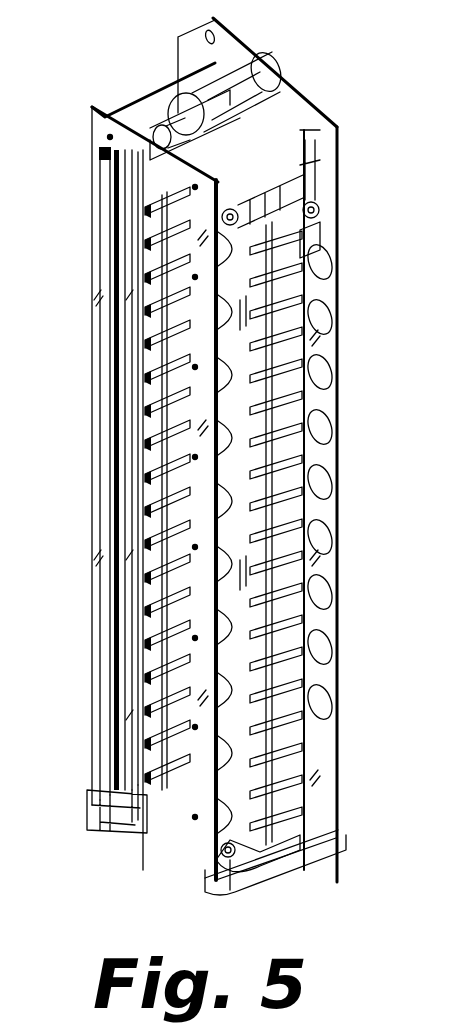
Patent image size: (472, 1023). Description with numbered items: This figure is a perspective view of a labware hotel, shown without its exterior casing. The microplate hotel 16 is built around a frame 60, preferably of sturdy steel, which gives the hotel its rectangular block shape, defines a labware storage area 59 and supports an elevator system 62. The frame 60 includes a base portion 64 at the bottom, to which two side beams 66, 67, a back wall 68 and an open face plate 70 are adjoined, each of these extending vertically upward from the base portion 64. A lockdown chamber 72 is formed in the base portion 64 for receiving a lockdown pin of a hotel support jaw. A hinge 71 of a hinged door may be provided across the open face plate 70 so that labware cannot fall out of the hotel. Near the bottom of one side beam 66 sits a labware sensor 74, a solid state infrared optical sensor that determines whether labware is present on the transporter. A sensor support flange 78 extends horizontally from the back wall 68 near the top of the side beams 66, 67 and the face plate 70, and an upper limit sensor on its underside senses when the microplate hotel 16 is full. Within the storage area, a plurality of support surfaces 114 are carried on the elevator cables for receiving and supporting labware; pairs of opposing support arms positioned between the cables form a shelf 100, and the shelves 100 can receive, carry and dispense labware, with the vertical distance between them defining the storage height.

The microplate hotel 16 is at (113, 64).
The labware storage area 59 is at (138, 358).
The frame 60 is at (330, 342).
The elevator system 62 is at (322, 186).
The base portion 64 is at (335, 848).
The side beam 66 is at (328, 528).
The side beam 67 is at (150, 290).
The back wall 68 is at (330, 290).
The open face plate 70 is at (200, 588).
The hinge 71 is at (121, 240).
The lockdown chamber 72 is at (292, 866).
The labware sensor 74 is at (132, 808).
The sensor support flange 78 is at (300, 75).
The shelf 100 is at (128, 478).
The support surfaces 114 is at (320, 470).